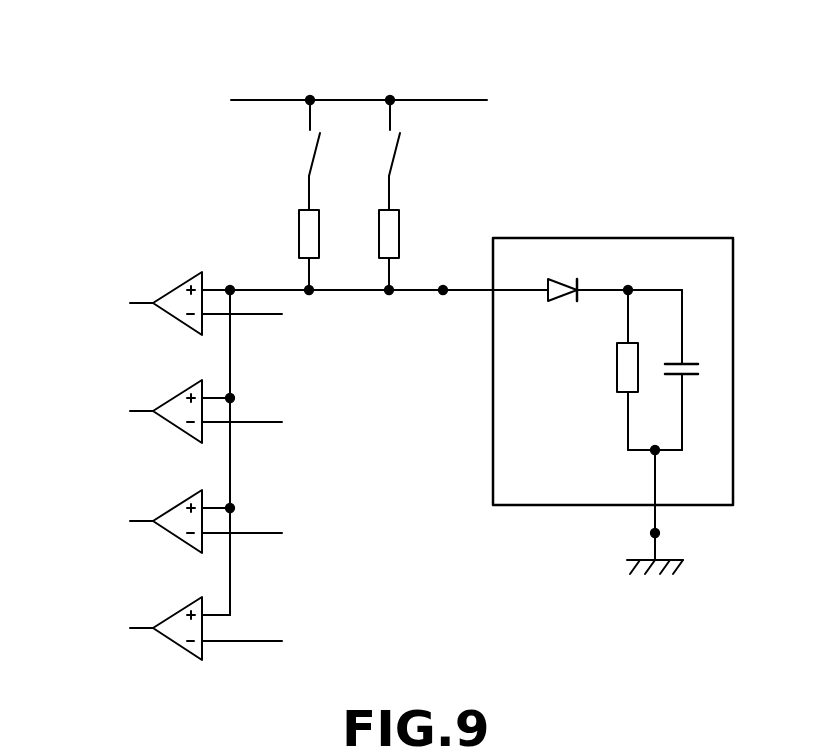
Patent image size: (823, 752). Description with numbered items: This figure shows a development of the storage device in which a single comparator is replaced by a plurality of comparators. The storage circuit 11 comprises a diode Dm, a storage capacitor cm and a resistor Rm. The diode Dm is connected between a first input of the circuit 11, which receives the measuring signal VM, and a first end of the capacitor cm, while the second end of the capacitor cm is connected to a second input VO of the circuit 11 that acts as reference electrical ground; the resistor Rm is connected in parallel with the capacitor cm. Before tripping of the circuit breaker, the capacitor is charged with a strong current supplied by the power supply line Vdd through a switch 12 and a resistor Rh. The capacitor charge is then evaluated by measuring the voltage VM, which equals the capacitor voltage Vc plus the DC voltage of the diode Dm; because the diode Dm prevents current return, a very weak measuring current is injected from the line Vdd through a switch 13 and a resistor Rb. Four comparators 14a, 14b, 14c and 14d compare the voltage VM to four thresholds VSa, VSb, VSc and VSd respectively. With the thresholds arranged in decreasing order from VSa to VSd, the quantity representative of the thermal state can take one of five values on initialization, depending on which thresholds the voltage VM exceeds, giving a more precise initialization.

The storage circuit 11 is at (617, 331).
The switch 12 is at (392, 168).
The switch 13 is at (312, 168).
The comparator 14a is at (173, 288).
The comparator 14b is at (173, 396).
The comparator 14c is at (175, 503).
The comparator 14d is at (175, 612).
The power supply line Vdd is at (350, 100).
The resistor Rb is at (298, 242).
The resistor Rh is at (400, 240).
The measuring signal VM is at (463, 292).
The threshold VSa is at (280, 315).
The threshold VSb is at (280, 423).
The threshold VSc is at (280, 534).
The threshold VSd is at (280, 642).
The diode Dm is at (556, 302).
The resistor Rm is at (618, 393).
The storage capacitor cm is at (692, 363).
The capacitor voltage Vc is at (682, 290).
The second input VO is at (653, 550).